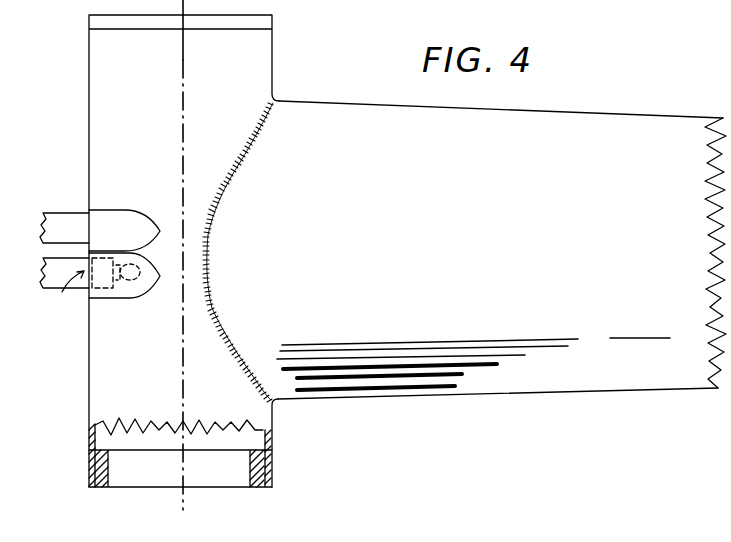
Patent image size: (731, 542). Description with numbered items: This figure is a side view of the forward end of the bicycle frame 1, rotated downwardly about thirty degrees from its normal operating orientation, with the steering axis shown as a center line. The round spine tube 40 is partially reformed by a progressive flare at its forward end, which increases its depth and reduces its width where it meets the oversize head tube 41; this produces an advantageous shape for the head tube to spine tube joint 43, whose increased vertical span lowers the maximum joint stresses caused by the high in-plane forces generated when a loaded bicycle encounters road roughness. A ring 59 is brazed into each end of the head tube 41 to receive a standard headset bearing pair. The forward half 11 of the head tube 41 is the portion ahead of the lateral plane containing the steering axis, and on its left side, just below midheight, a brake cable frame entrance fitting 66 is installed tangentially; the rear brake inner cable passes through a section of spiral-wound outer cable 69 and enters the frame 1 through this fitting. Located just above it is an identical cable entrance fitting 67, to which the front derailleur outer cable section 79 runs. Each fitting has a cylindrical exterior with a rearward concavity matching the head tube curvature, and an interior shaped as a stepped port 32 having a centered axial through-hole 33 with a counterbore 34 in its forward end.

The frame 1 is at (668, 104).
The forward half of the head tube 11 is at (89, 112).
The stepped port 32 is at (68, 292).
The axial through-hole 33 is at (143, 302).
The counterbore 34 is at (114, 296).
The spine tube 40 is at (528, 396).
The head tube 41 is at (274, 68).
The head tube to spine tube joint 43 is at (236, 172).
The ring 59 is at (274, 22).
The brake cable frame entrance fitting 66 is at (158, 300).
The cable entrance fitting 67 is at (115, 210).
The spiral-wound outer cable 69 is at (46, 289).
The outer cable section 79 is at (72, 184).